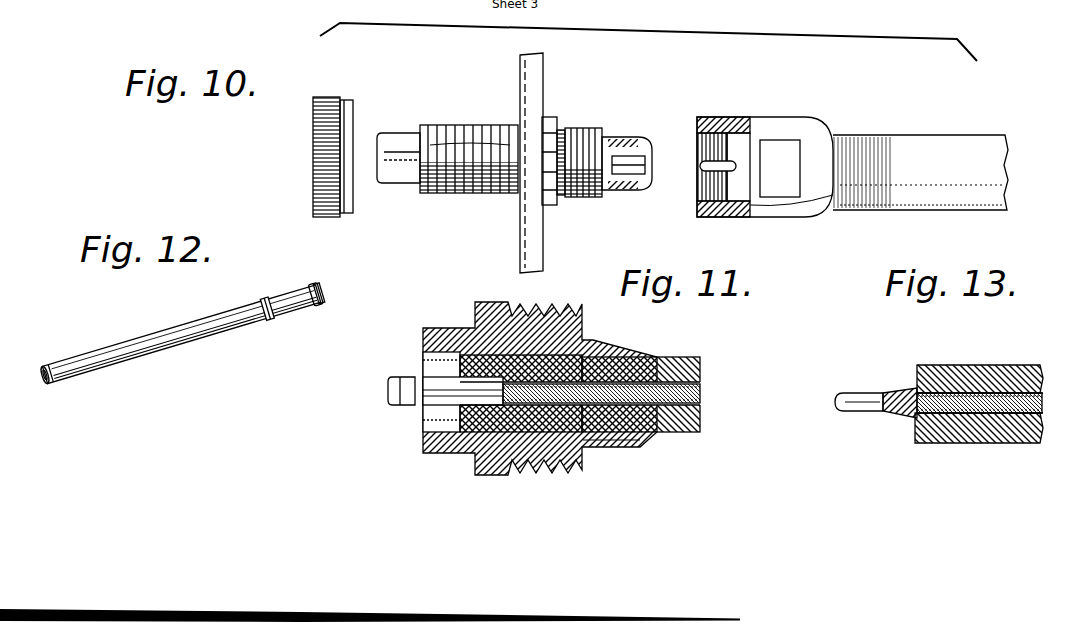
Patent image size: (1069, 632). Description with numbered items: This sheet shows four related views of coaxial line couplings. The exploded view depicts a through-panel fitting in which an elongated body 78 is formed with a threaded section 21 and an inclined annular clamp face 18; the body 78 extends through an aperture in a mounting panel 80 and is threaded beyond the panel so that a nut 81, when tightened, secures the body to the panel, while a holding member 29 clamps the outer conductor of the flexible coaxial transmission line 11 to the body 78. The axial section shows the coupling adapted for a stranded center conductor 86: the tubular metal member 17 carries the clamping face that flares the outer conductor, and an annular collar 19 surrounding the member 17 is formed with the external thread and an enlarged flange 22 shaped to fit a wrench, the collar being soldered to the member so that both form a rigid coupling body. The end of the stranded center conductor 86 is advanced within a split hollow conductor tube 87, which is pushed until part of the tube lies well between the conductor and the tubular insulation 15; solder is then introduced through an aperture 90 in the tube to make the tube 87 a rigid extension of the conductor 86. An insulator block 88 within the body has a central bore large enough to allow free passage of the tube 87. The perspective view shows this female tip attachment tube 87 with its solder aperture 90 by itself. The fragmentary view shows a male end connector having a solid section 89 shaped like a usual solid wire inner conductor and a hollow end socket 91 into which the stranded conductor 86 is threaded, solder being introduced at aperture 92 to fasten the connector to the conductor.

In FIG. 10, the nut 81 is at (330, 97).
In FIG. 10, the elongated body 78 is at (486, 125).
In FIG. 10, the mounting panel 80 is at (543, 68).
In FIG. 10, the enlarged flange 22 is at (556, 121).
In FIG. 10, the threaded section 21 is at (591, 198).
In FIG. 10, the inclined annular clamping face 18 is at (641, 140).
In FIG. 10, the holding member 29 is at (783, 122).
In FIG. 10, the flexible coaxial conductor transmission line 11 is at (930, 135).
In FIG. 11, the tubular metal member 17 is at (614, 348).
In FIG. 11, the insulator block 88 is at (470, 328).
In FIG. 11, the annular collar 19 is at (590, 334).
In FIG. 11, the tubular insulation 15 is at (690, 359).
In FIG. 13, the tubular insulation 15 is at (1024, 369).
In FIG. 11, the aperture 90 is at (578, 352).
In FIG. 12, the aperture 90 is at (268, 310).
In FIG. 11, the stranded center conductor 86 is at (703, 397).
In FIG. 13, the stranded center conductor 86 is at (993, 444).
In FIG. 11, the split hollow conductor tube 87 is at (632, 440).
In FIG. 12, the split hollow conductor tube 87 is at (207, 332).
In FIG. 13, the hollow end socket 91 is at (953, 384).
In FIG. 13, the aperture 92 is at (907, 388).
In FIG. 13, the solid section 89 is at (862, 410).